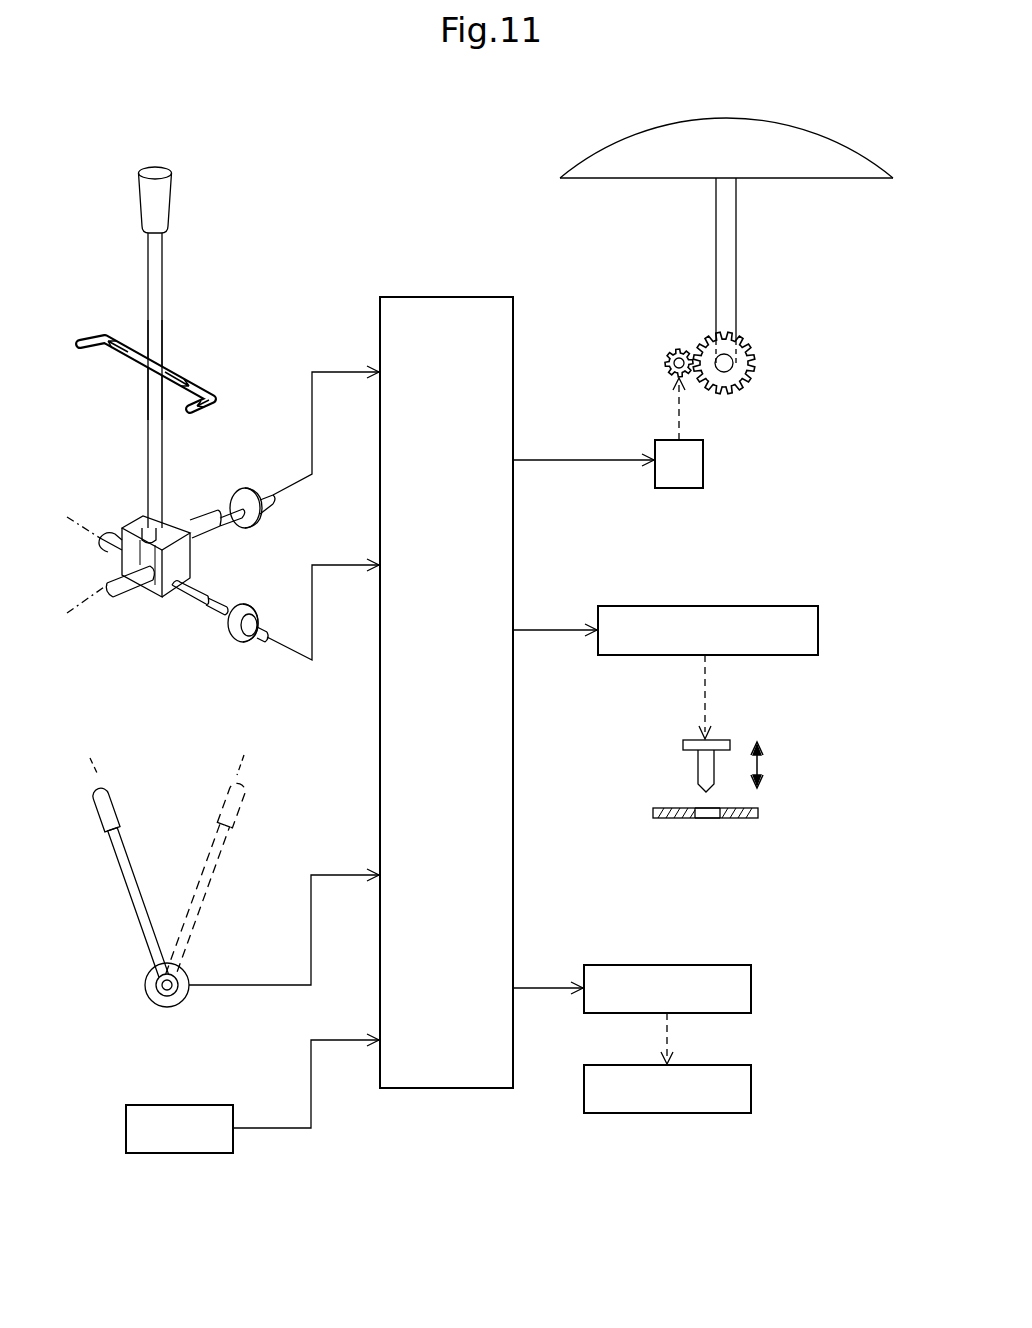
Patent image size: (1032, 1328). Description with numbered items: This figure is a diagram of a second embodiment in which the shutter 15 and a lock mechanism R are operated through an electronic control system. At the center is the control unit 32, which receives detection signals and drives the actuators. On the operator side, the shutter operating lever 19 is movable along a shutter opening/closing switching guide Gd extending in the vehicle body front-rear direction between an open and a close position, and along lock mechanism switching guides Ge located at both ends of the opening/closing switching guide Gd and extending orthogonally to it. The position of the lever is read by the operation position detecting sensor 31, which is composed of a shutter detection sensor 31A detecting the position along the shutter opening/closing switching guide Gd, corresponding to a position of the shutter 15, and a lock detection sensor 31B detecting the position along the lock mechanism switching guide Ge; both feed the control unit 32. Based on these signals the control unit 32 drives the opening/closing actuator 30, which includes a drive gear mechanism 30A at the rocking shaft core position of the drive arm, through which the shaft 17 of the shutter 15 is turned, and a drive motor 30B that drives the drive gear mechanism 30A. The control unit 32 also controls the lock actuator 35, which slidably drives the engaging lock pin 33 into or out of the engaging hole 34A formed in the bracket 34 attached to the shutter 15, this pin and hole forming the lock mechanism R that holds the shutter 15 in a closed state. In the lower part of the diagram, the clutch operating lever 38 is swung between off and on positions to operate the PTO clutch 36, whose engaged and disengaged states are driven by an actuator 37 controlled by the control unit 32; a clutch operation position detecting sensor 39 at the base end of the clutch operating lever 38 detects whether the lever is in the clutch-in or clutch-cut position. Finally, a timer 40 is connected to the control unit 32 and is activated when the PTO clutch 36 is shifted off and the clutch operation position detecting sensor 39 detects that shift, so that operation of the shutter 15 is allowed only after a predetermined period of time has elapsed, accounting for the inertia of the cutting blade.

The shutter 15 is at (722, 132).
The shaft 17 is at (722, 258).
The shutter operating lever 19 is at (170, 212).
The opening/closing actuator 30 is at (832, 405).
The drive gear mechanism 30A is at (748, 387).
The drive motor 30B is at (703, 468).
The operation position detecting sensor 31 is at (298, 514).
The shutter detection sensor 31A is at (240, 640).
The lock detection sensor 31B is at (240, 512).
The control unit 32 is at (446, 296).
The engaging lock pin 33 is at (697, 768).
The bracket 34 is at (737, 820).
The engaging hole 34A is at (706, 820).
The lock actuator 35 is at (697, 604).
The PTO clutch 36 is at (752, 1090).
The actuator 37 is at (752, 988).
The clutch operating lever 38 is at (120, 880).
The clutch operation position detecting sensor 39 is at (148, 990).
The timer 40 is at (178, 1157).
The lock mechanism switching guide Ge is at (112, 335).
The shutter opening/closing switching guide Gd is at (178, 378).
The lock mechanism R is at (648, 792).